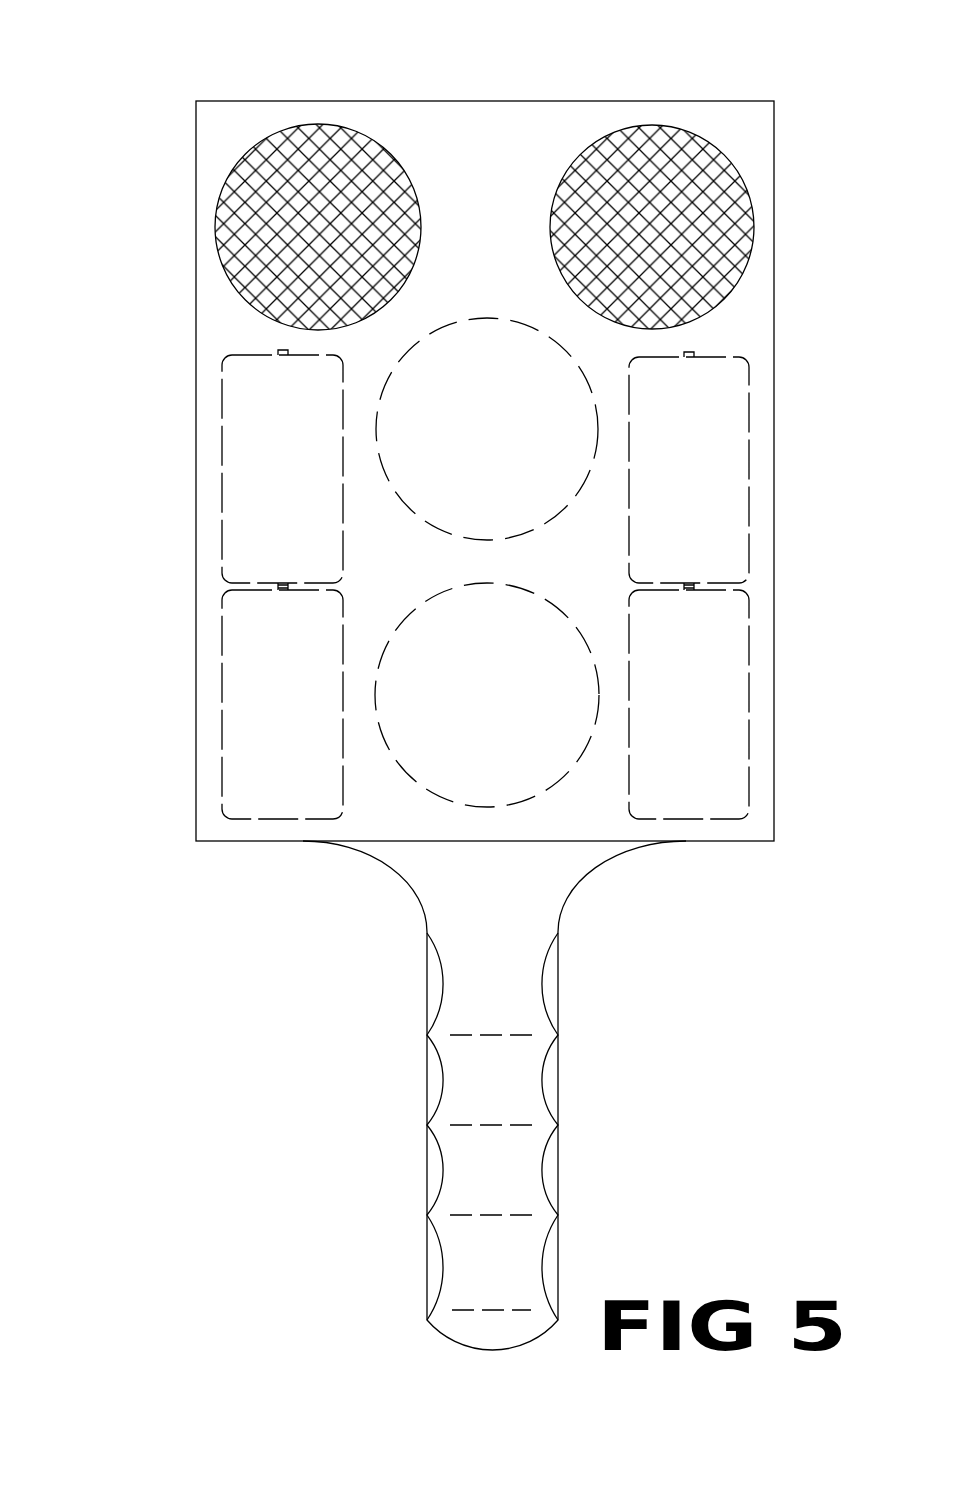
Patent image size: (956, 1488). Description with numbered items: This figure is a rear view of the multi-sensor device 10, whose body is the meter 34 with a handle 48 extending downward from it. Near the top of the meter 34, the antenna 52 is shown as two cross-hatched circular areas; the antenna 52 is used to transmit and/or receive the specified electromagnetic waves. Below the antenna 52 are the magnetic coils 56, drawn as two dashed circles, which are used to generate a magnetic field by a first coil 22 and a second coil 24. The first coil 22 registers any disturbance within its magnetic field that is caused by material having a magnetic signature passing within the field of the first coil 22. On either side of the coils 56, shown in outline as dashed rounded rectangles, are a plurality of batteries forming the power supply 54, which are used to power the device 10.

The multi-sensor device 10 is at (416, 677).
The meter 34 is at (305, 100).
The antenna 52 is at (572, 233).
The power supply 54 is at (238, 453).
The coils 56 is at (493, 574).
The second coil 24 is at (520, 510).
The first coil 22 is at (515, 753).
The handle 48 is at (530, 1137).